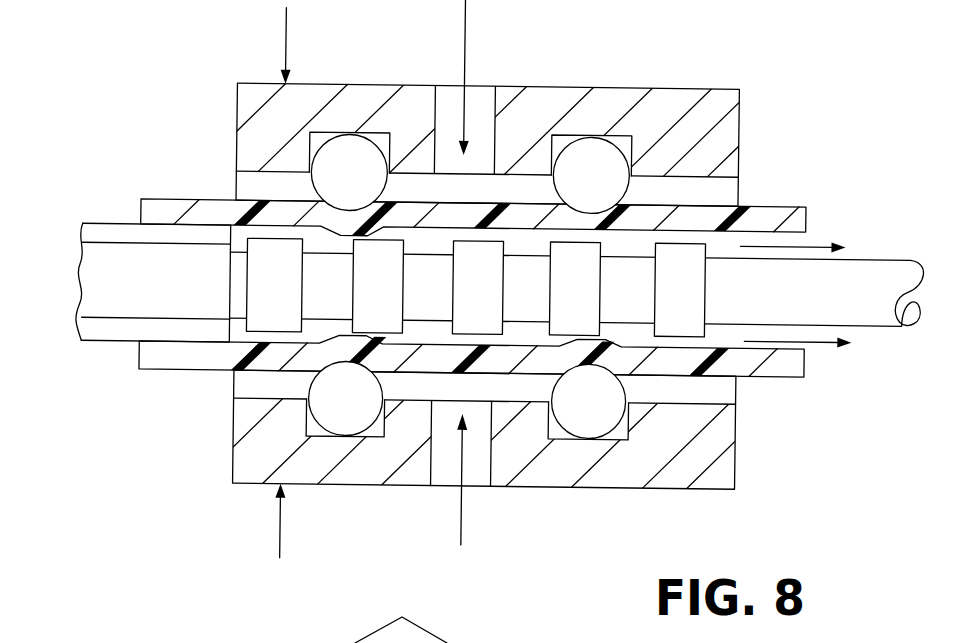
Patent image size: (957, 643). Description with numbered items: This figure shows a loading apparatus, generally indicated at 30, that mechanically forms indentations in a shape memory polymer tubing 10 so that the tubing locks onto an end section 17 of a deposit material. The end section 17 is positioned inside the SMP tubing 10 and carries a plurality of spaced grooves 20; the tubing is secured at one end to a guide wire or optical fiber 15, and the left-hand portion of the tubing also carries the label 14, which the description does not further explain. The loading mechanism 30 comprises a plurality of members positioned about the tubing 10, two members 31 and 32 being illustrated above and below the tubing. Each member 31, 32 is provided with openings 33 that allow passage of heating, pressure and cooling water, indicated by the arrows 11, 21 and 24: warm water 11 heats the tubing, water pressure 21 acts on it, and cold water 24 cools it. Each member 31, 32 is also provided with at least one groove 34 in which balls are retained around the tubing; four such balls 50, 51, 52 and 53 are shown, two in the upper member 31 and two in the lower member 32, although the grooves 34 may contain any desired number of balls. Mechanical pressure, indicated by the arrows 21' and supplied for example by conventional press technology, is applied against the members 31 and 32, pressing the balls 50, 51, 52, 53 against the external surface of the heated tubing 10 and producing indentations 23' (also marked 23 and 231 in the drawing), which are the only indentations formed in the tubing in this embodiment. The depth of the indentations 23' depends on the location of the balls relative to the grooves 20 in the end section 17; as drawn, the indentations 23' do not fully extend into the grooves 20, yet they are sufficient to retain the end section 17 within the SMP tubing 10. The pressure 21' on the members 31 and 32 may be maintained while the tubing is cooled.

The SMP tubing 10 is at (160, 373).
The heating arrow 11 is at (464, 29).
The input shaft sleeve 14 is at (110, 247).
The guide wire or optical fiber 15 is at (100, 345).
The end section 17 is at (880, 255).
The grooves 20 is at (318, 322).
The pressure arrow 21 is at (530, 493).
The mechanical pressure 21' is at (245, 291).
The groove 23 is at (720, 178).
The indentations 23' is at (487, 291).
The groove 231 is at (337, 215).
The cooling arrow 24 is at (670, 174).
The loading mechanism 30 is at (197, 112).
The member 31 is at (235, 154).
The member 32 is at (235, 471).
The openings 33 is at (434, 86).
The groove 34 is at (327, 133).
The ball 50 is at (345, 152).
The ball 51 is at (600, 157).
The ball 52 is at (347, 420).
The ball 53 is at (605, 412).